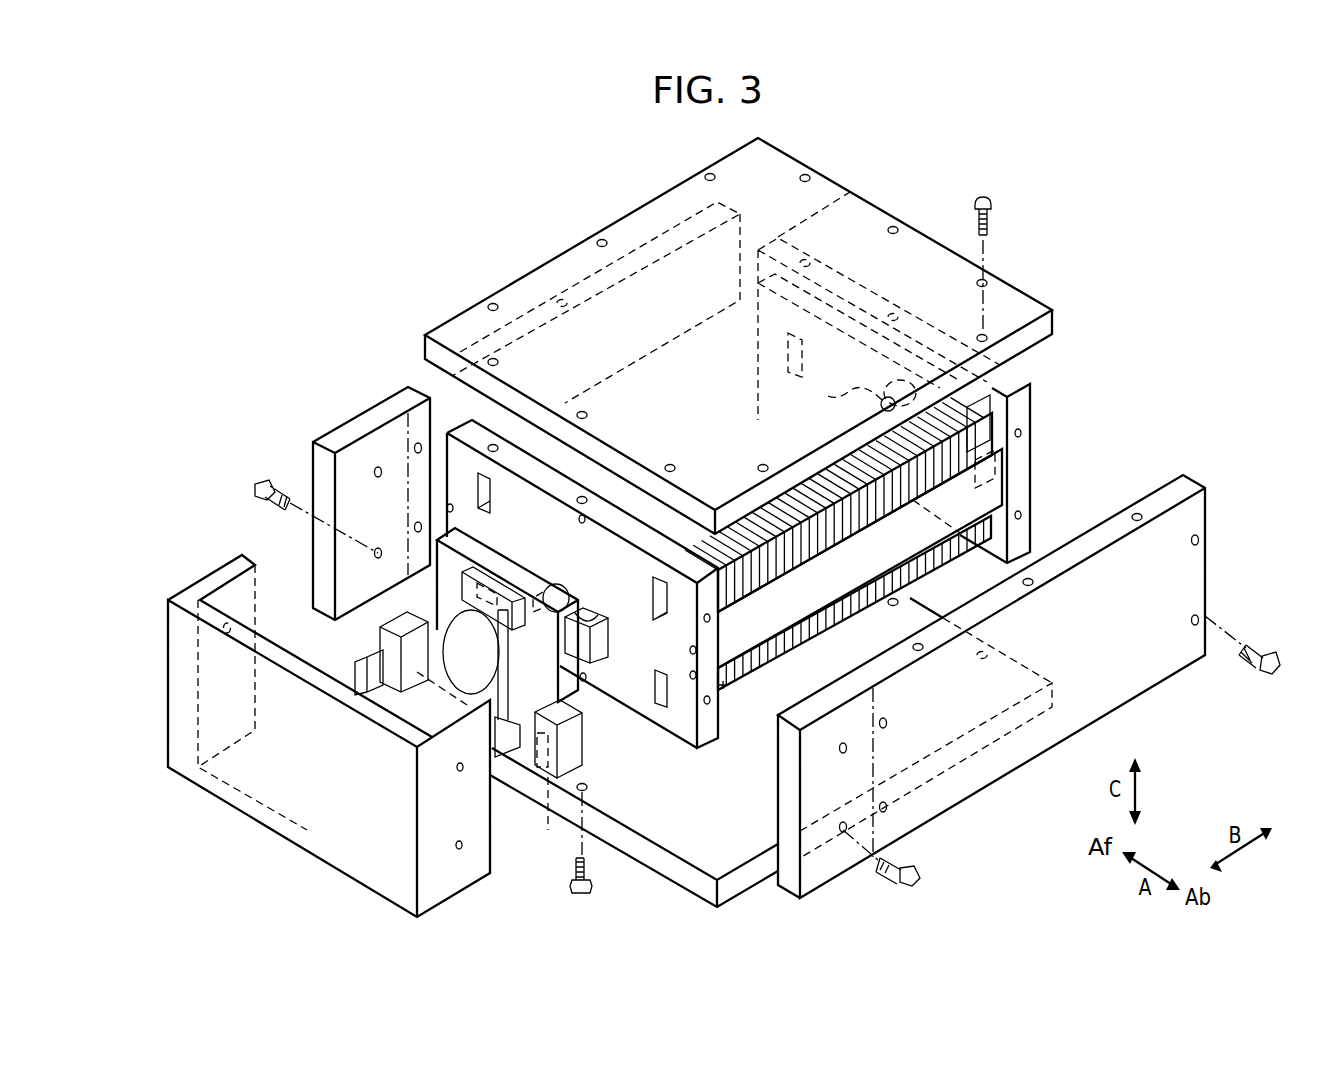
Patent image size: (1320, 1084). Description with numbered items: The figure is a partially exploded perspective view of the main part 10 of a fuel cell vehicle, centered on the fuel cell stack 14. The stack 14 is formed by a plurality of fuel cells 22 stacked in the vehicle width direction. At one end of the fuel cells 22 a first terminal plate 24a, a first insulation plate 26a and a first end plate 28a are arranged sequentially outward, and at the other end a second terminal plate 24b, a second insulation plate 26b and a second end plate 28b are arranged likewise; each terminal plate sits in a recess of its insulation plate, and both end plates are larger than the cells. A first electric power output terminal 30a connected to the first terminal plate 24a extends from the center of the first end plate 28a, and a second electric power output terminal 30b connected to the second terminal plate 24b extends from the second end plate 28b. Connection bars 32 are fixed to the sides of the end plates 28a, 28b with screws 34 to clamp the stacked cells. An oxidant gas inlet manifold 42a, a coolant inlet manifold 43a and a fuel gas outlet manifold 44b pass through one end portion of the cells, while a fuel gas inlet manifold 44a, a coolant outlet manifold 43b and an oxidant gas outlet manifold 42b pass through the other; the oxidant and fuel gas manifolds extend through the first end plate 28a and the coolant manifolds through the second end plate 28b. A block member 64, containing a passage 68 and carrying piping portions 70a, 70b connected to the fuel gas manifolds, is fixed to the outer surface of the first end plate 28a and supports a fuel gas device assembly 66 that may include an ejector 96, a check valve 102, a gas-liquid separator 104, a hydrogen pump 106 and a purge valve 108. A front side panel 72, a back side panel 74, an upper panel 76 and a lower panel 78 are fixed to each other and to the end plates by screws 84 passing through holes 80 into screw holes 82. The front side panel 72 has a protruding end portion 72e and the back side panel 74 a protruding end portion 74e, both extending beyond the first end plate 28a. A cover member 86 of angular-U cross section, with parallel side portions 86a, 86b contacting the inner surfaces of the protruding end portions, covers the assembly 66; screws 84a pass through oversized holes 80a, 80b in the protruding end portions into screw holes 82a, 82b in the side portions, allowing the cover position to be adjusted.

The fuel cell system 10 is at (811, 123).
The fuel cell stack 14 is at (1018, 251).
The fuel cells 22 is at (786, 643).
The first terminal plate 24a is at (740, 694).
The second terminal plate 24b is at (1023, 433).
The first insulation plate 26a is at (721, 693).
The second insulation plate 26b is at (992, 420).
The first end plate 28a is at (458, 423).
The second end plate 28b is at (1022, 390).
The first electric power output terminal 30a is at (572, 592).
The second electric power output terminal 30b is at (882, 400).
The connection bars 32 is at (875, 327).
The screws 34 is at (580, 524).
The oxidant gas inlet manifold 42a is at (478, 490).
The oxidant gas outlet manifold 42b is at (652, 696).
The coolant inlet manifold 43a is at (787, 350).
The coolant outlet manifold 43b is at (1000, 470).
The fuel gas inlet manifold 44a is at (652, 580).
The fuel gas outlet manifold 44b is at (504, 493).
The block member 64 is at (572, 752).
The fuel gas device assembly 66 is at (535, 574).
The passage 68 is at (397, 718).
The piping portion 70a is at (606, 646).
The piping portion 70b is at (430, 600).
The front side panel 72 is at (313, 475).
The protruding end portion 72e is at (347, 553).
The back side panel 74 is at (1125, 683).
The protruding end portion 74e is at (813, 800).
The upper panel 76 is at (858, 222).
The lower panel 78 is at (1002, 738).
The holes 80 is at (414, 446).
The hole 80a is at (378, 549).
The hole 80b is at (841, 822).
The screw holes 82 is at (560, 300).
The screw hole 82a is at (224, 629).
The screw hole 82b is at (457, 841).
The screws 84 is at (988, 200).
The screws 84a is at (255, 486).
The cover member 86 is at (182, 594).
The side portion 86a is at (217, 572).
The side portion 86b is at (492, 830).
The ejector 96 is at (503, 608).
The check valve 102 is at (507, 740).
The gas-liquid separator 104 is at (382, 683).
The hydrogen pump 106 is at (482, 675).
The purge valve 108 is at (380, 670).